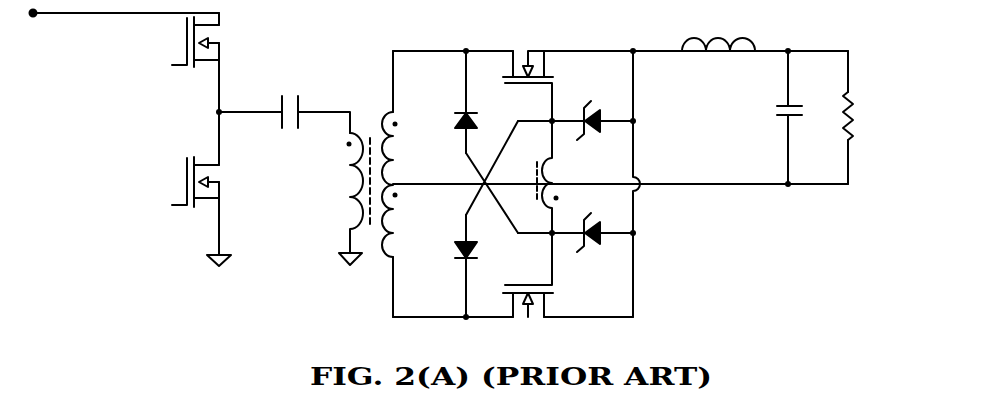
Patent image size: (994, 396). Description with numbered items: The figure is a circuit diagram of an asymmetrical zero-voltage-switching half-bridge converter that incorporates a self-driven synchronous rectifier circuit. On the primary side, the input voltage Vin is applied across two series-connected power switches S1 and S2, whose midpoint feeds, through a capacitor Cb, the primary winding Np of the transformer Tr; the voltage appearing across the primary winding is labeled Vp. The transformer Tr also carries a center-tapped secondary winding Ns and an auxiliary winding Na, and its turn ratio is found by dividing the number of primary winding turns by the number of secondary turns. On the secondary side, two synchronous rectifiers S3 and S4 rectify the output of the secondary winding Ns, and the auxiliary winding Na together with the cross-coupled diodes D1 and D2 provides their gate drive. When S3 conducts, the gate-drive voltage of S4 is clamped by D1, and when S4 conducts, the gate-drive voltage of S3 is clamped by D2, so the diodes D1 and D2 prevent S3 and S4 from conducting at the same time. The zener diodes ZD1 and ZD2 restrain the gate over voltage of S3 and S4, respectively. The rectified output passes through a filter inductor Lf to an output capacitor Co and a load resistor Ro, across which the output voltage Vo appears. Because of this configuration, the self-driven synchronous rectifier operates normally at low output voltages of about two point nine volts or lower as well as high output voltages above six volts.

The input voltage Vin is at (125, 32).
The power switch S1 is at (173, 44).
The power switch S2 is at (175, 182).
The blocking capacitor Cb is at (294, 95).
The transformer Tr is at (369, 166).
The primary winding Np is at (337, 193).
The primary winding voltage Vp is at (300, 235).
The secondary winding Ns is at (404, 184).
The auxiliary winding Na is at (561, 177).
The diode D1 is at (448, 102).
The diode D2 is at (451, 266).
The secondary synchronous rectifier S3 is at (528, 70).
The secondary synchronous rectifier S4 is at (528, 293).
The zener diode ZD1 is at (594, 104).
The zener diode ZD2 is at (596, 250).
The output filter inductor Lf is at (718, 30).
The output capacitor Co is at (773, 111).
The load resistor Ro is at (833, 116).
The output voltage Vo is at (870, 65).